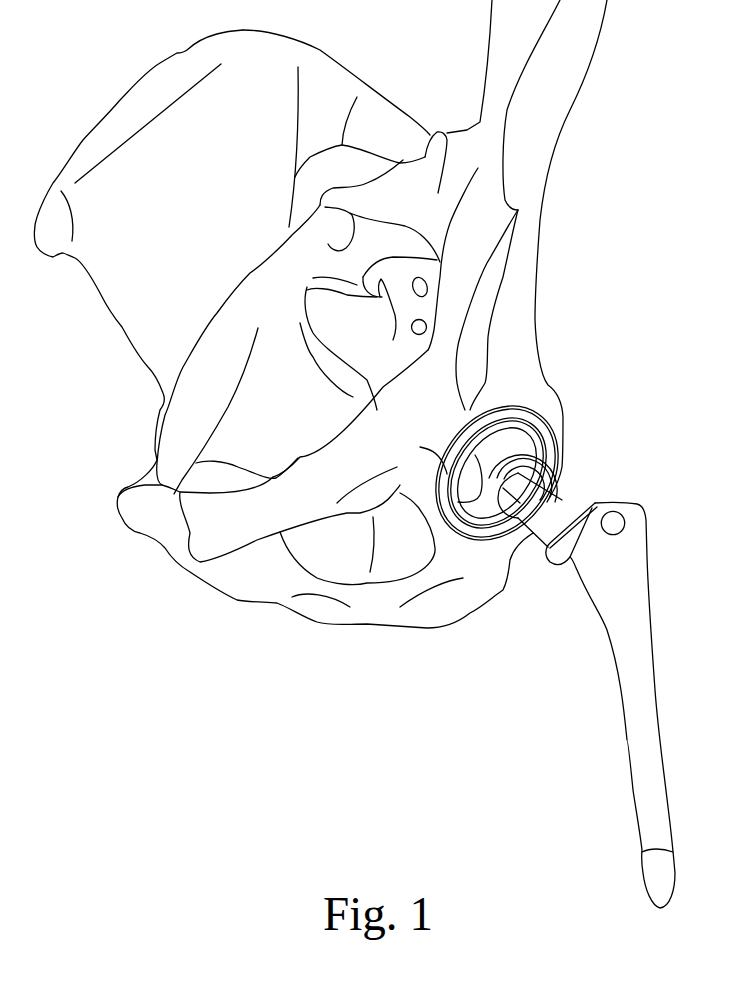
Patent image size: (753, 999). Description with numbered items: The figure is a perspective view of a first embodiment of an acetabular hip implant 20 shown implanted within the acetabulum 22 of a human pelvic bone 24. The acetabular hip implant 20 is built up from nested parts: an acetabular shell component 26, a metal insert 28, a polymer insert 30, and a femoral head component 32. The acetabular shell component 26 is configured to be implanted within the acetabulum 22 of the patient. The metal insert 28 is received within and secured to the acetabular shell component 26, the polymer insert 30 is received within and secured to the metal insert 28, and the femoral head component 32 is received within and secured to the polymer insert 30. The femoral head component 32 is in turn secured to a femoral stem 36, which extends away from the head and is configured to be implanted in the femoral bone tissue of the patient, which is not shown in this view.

The acetabular hip implant 20 is at (543, 634).
The acetabulum 22 is at (547, 403).
The pelvic bone 24 is at (443, 133).
The acetabular shell component 26 is at (559, 430).
The metal insert 28 is at (443, 517).
The polymer insert 30 is at (420, 447).
The femoral head component 32 is at (528, 445).
The femoral stem 36 is at (558, 502).